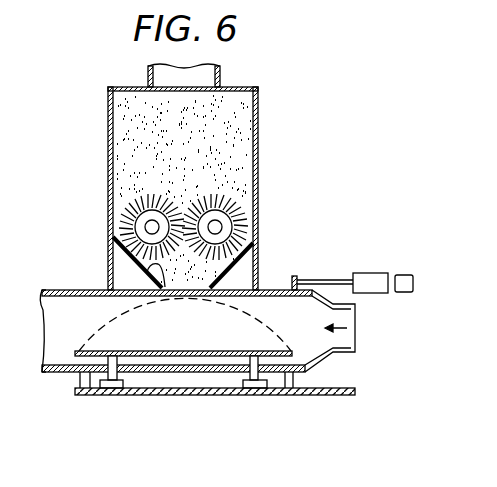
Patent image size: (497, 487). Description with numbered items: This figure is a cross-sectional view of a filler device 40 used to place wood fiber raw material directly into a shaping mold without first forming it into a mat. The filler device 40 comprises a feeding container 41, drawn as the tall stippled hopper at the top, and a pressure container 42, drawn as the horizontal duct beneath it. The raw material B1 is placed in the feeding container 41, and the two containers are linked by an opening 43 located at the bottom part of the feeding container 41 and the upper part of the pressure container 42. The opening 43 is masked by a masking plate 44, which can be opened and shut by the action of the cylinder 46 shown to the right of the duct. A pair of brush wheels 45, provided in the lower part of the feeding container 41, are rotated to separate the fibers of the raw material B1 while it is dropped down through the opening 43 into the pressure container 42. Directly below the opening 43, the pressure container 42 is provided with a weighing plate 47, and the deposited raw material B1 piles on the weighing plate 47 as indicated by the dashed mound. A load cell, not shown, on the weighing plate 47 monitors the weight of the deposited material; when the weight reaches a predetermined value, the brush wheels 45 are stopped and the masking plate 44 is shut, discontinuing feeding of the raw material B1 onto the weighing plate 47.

The filler device 40 is at (207, 396).
The feeding container 41 is at (259, 156).
The pressure container 42 is at (330, 360).
The opening 43 is at (147, 268).
The masking plate 44 is at (270, 289).
The brush wheels 45 is at (222, 221).
The cylinder 46 is at (370, 282).
The weighing plate 47 is at (169, 360).
The raw material B1 is at (238, 125).